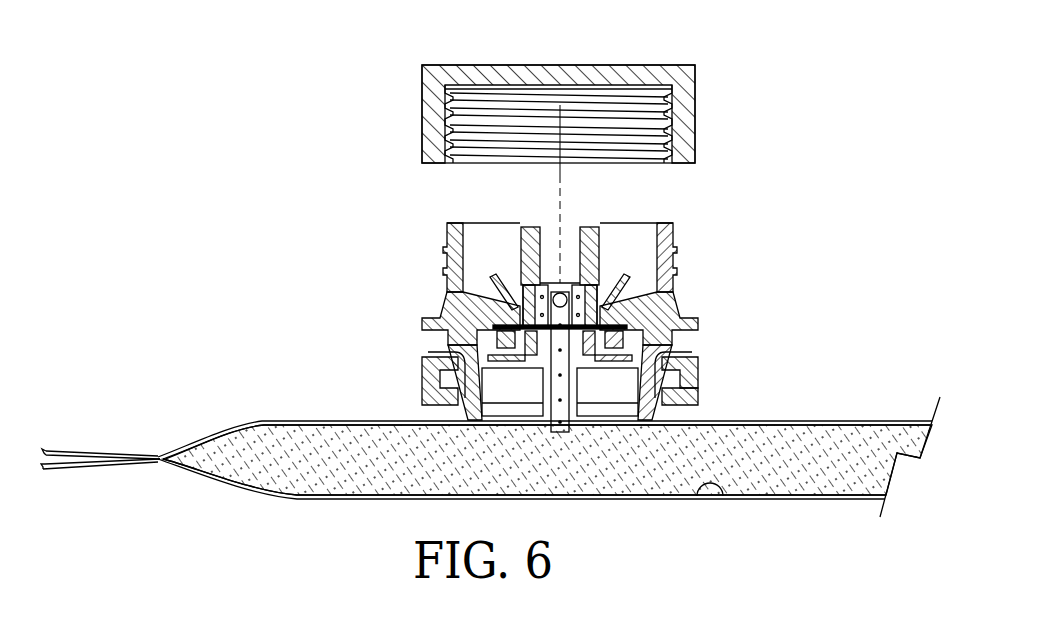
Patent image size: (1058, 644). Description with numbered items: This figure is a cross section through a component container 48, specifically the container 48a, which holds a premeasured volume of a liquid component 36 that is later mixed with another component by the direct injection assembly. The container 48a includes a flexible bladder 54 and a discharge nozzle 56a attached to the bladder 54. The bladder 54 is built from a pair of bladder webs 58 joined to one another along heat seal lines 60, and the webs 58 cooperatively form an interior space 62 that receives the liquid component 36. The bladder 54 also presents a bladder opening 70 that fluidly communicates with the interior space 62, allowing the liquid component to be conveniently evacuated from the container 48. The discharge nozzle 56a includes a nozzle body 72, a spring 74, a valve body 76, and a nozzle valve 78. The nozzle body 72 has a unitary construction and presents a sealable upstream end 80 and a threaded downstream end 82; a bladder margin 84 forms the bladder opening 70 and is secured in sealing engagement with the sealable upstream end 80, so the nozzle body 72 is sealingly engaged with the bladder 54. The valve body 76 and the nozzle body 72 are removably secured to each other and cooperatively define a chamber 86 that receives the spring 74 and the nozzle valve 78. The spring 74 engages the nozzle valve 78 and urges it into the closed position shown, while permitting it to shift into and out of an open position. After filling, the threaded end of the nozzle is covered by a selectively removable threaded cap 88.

The liquid component 36 is at (815, 445).
The container 48 is at (835, 500).
The container 48a is at (793, 168).
The flexible bladder 54 is at (283, 498).
The discharge nozzle 56a is at (693, 329).
The bladder web 58 is at (258, 420).
The heat seal line 60 is at (150, 455).
The interior space 62 is at (712, 487).
The bladder opening 70 is at (465, 388).
The nozzle body 72 is at (606, 292).
The spring 74 is at (622, 326).
The valve body 76 is at (696, 399).
The nozzle valve 78 is at (599, 250).
The sealable upstream end 80 is at (473, 423).
The threaded downstream end 82 is at (455, 232).
The bladder margin 84 is at (699, 372).
The chamber 86 is at (530, 306).
The threaded cap 88 is at (688, 82).